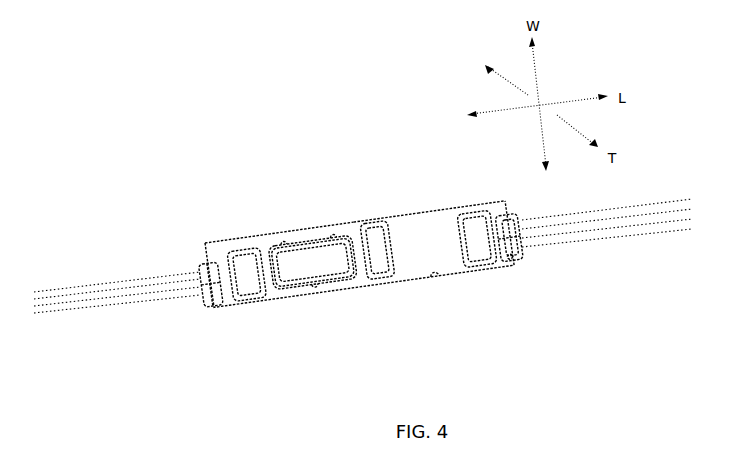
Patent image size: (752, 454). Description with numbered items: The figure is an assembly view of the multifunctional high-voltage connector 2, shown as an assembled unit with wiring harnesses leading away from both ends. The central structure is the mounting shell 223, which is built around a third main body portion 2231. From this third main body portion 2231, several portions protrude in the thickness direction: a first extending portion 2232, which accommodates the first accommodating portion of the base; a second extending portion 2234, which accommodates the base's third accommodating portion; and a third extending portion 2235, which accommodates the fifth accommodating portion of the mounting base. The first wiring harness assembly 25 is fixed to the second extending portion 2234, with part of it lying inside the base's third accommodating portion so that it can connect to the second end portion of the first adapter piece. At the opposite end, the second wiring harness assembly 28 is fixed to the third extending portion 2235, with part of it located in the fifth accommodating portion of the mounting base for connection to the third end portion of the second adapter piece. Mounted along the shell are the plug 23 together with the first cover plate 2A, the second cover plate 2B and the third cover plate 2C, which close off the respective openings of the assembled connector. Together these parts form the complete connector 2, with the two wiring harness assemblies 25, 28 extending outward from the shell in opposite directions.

The multifunctional high-voltage connector 2 is at (148, 156).
The mounting shell 223 is at (437, 165).
The second extending portion 2234 is at (245, 233).
The first extending portion 2232 is at (327, 230).
The third main body portion 2231 is at (406, 222).
The third extending portion 2235 is at (432, 211).
The first wiring harness assembly 25 is at (204, 309).
The second cover plate 2B is at (262, 303).
The first cover plate 2A is at (315, 275).
The plug 23 is at (381, 262).
The third cover plate 2C is at (487, 247).
The second wiring harness assembly 28 is at (515, 252).